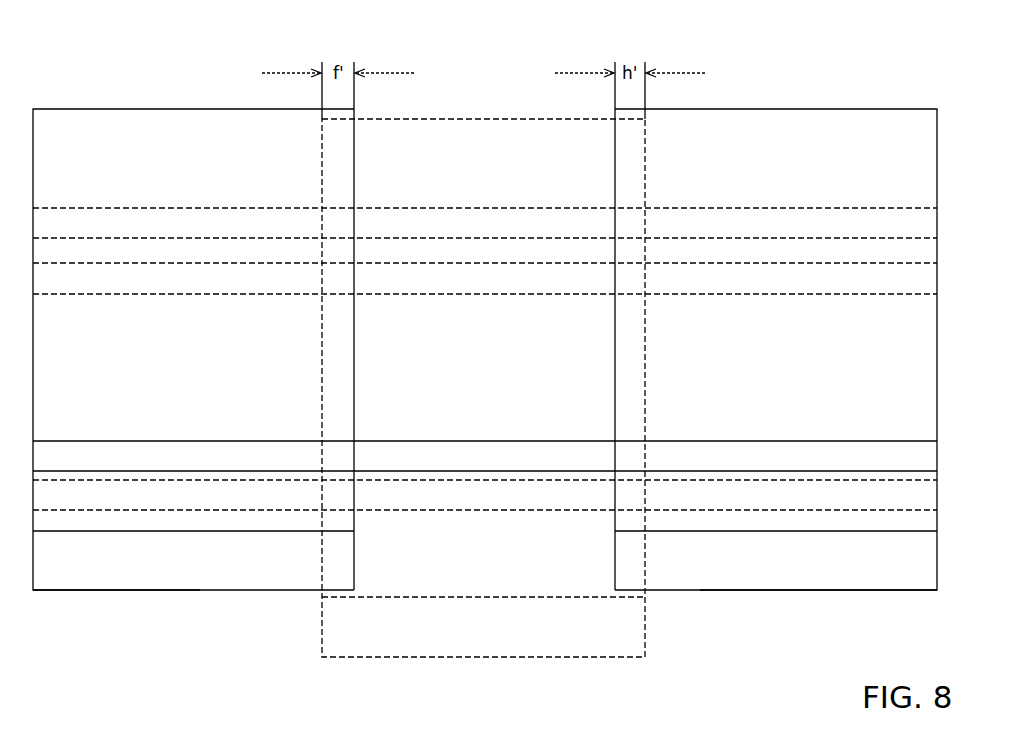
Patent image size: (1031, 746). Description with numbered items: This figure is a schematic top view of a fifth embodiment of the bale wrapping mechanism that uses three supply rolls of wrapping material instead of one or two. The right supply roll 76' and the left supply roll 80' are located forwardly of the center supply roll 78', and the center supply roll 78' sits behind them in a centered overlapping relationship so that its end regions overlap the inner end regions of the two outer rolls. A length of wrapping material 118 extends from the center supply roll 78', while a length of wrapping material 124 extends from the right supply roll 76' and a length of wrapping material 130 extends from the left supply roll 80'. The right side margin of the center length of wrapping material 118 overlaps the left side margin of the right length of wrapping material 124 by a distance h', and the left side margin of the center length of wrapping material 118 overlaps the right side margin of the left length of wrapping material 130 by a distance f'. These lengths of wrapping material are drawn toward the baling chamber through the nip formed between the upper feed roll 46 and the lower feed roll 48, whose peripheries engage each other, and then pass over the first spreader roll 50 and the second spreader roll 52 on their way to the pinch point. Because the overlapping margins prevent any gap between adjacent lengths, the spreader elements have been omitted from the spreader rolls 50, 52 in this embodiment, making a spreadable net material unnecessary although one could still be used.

The length of wrapping material 130 is at (116, 107).
The length of wrapping material 118 is at (445, 118).
The length of wrapping material 124 is at (748, 109).
The second spreader roll 52 is at (917, 208).
The first spreader roll 50 is at (917, 294).
The lower feed roll 48 is at (917, 441).
The upper feed roll 46 is at (917, 510).
The left supply roll 80' is at (116, 617).
The right supply roll 76' is at (818, 621).
The center supply roll 78' is at (483, 654).